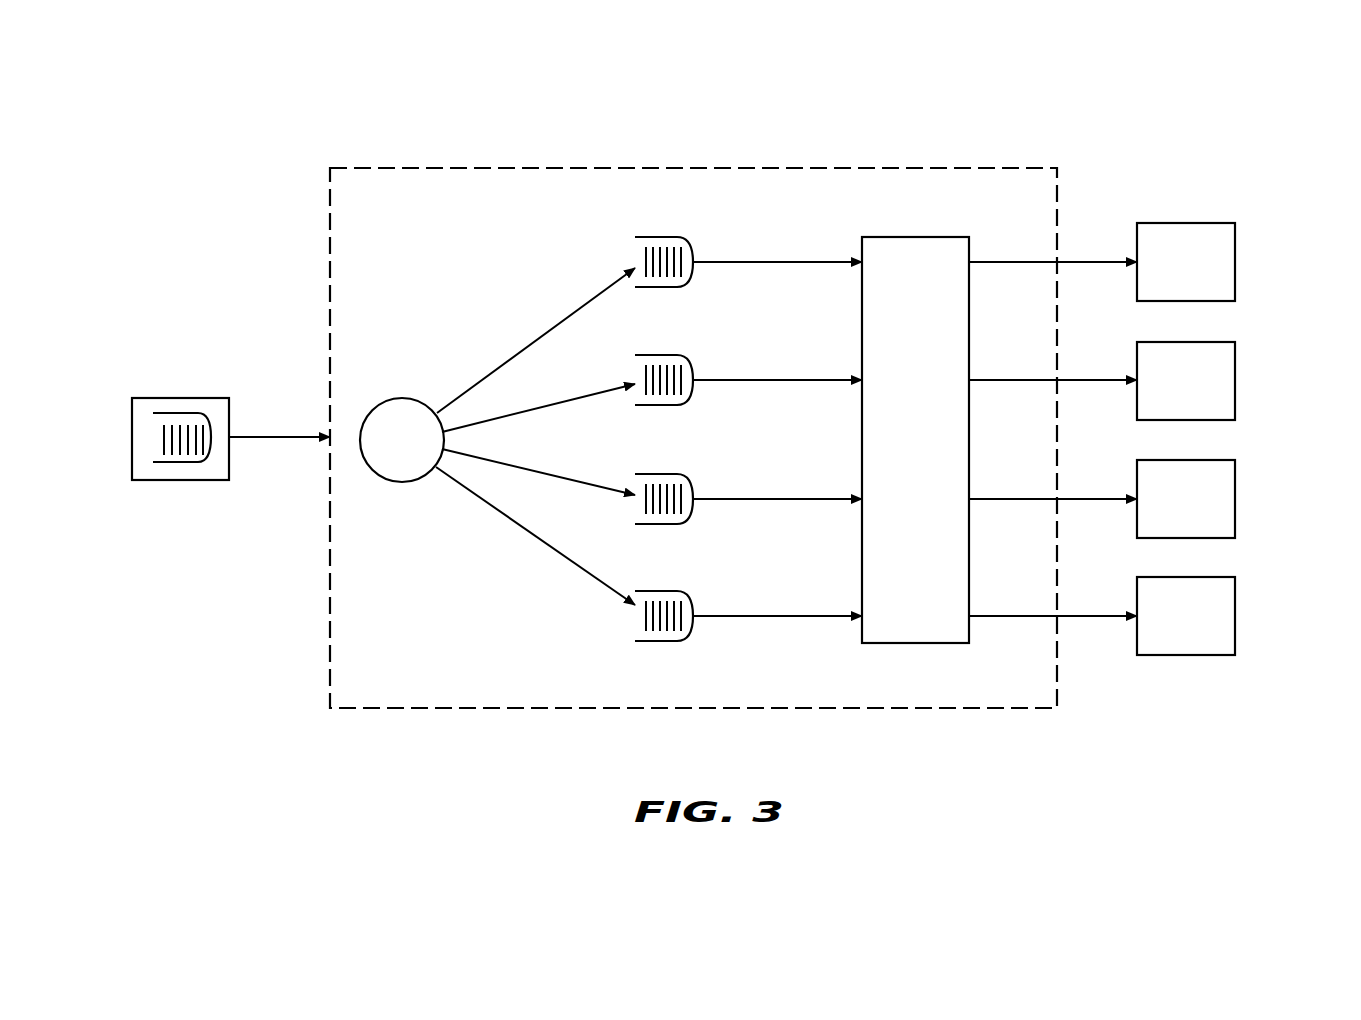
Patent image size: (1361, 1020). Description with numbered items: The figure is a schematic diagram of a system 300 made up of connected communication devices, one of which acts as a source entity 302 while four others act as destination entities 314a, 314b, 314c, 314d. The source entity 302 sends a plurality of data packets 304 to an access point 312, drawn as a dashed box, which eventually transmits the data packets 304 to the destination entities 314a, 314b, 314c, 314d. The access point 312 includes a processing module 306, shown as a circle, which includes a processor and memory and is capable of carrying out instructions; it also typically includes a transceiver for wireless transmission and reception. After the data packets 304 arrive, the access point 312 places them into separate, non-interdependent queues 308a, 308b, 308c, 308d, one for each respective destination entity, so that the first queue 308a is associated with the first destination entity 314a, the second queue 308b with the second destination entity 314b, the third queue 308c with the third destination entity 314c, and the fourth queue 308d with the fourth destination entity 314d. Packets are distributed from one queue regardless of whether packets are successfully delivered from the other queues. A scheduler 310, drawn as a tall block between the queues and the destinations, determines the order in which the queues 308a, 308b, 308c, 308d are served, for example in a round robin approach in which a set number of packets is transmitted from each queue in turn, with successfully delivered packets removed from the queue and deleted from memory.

The system 300 is at (218, 137).
The communication device acting as source entity 302 is at (190, 398).
The data packets 304 is at (183, 462).
The processing module 306 is at (408, 398).
The first queue 308a is at (692, 239).
The second queue 308b is at (692, 357).
The third queue 308c is at (692, 476).
The fourth queue 308d is at (692, 593).
The scheduler 310 is at (920, 237).
The access point 312 is at (564, 168).
The first destination entity 314a is at (1235, 258).
The second destination entity 314b is at (1235, 377).
The third destination entity 314c is at (1235, 495).
The fourth destination entity 314d is at (1235, 612).